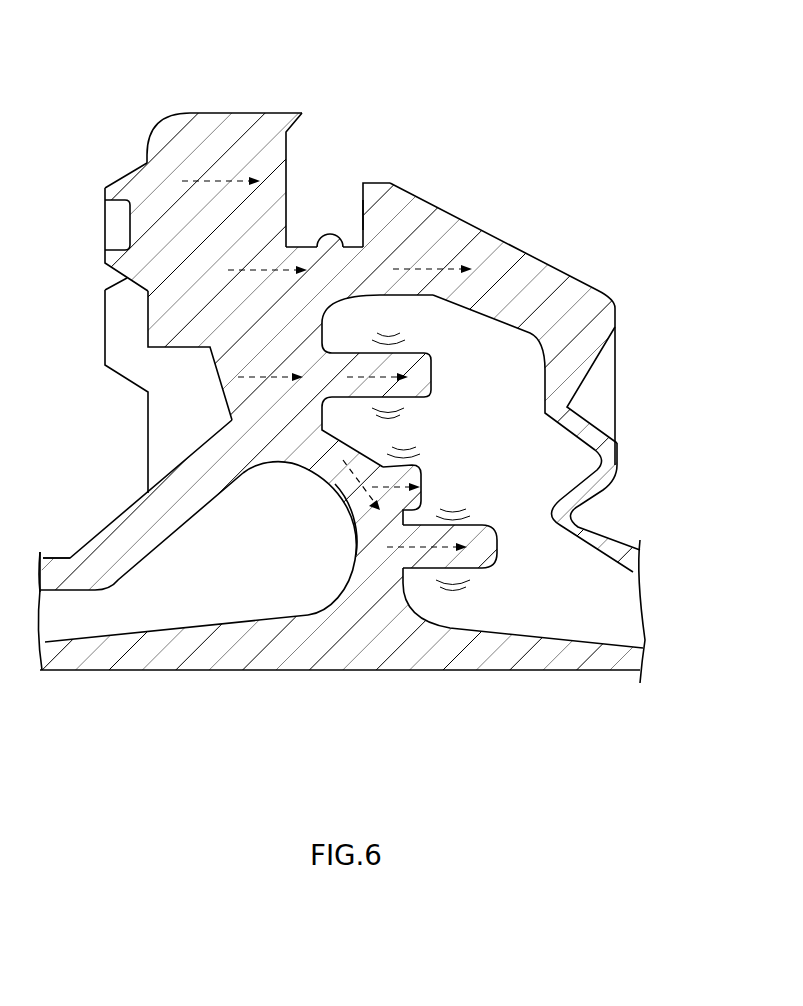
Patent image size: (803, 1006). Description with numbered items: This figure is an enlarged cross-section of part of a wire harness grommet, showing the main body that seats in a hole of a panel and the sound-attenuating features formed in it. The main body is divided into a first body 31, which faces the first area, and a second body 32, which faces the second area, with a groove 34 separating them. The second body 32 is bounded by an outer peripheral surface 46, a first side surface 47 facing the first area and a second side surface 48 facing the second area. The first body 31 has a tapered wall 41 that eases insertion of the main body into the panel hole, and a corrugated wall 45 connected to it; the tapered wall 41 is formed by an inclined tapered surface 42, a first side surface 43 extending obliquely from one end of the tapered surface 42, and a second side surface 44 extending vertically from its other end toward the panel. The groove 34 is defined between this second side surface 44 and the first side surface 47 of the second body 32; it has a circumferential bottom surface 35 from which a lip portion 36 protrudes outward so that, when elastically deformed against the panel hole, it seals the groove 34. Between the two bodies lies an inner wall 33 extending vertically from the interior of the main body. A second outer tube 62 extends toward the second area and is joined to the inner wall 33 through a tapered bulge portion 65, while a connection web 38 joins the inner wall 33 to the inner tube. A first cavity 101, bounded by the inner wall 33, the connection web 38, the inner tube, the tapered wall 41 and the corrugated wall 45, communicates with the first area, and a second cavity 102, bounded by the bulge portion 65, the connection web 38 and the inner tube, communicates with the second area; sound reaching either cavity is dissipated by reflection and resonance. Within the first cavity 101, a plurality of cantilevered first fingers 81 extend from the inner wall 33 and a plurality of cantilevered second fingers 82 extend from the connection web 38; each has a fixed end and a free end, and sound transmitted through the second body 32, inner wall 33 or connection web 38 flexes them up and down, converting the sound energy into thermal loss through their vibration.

The first body 31 is at (585, 203).
The second body 32 is at (198, 88).
The inner wall 33 is at (148, 392).
The groove 34 is at (325, 213).
The bottom surface 35 is at (365, 215).
The lip portion 36 is at (330, 234).
The connection web 38 is at (358, 547).
The tapered wall 41 is at (491, 203).
The tapered surface 42 is at (517, 247).
The first side surface 43 is at (595, 370).
The second side surface 44 is at (363, 246).
The corrugated wall 45 is at (608, 504).
The outer peripheral surface 46 is at (247, 112).
The first side surface 47 is at (286, 160).
The second side surface 48 is at (147, 160).
The second outer tube 62 is at (56, 567).
The bulge portion 65 is at (183, 462).
The first fingers 81 is at (425, 368).
The second fingers 82 is at (485, 537).
The first cavity 101 is at (514, 432).
The second cavity 102 is at (289, 536).